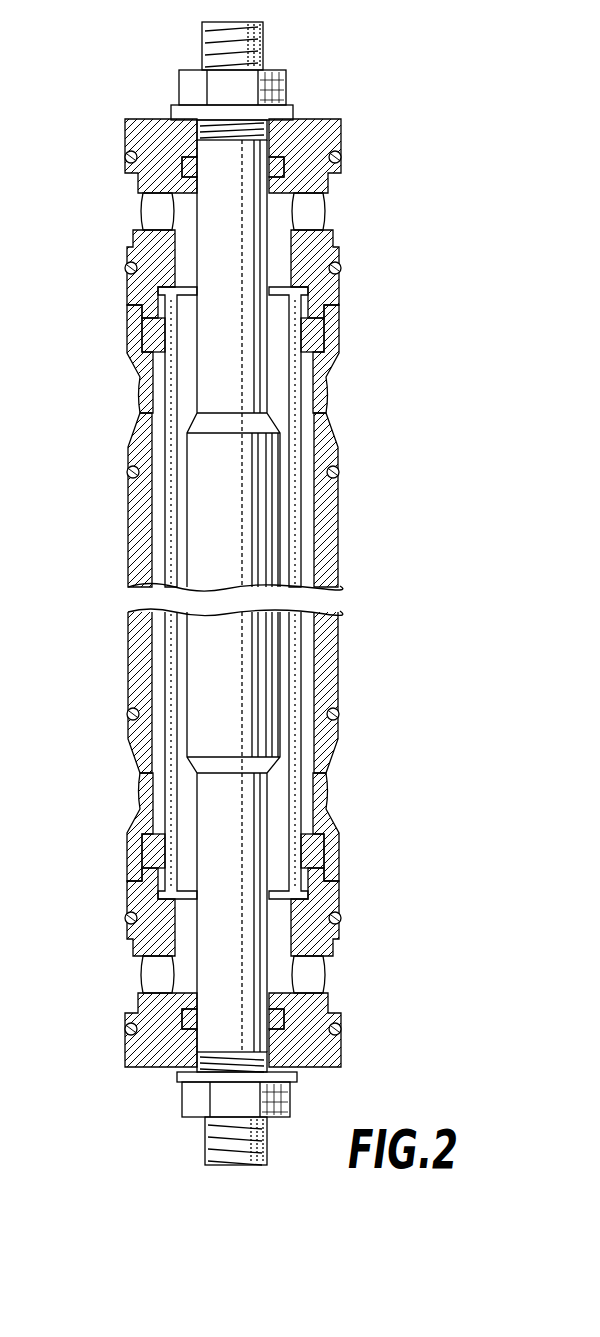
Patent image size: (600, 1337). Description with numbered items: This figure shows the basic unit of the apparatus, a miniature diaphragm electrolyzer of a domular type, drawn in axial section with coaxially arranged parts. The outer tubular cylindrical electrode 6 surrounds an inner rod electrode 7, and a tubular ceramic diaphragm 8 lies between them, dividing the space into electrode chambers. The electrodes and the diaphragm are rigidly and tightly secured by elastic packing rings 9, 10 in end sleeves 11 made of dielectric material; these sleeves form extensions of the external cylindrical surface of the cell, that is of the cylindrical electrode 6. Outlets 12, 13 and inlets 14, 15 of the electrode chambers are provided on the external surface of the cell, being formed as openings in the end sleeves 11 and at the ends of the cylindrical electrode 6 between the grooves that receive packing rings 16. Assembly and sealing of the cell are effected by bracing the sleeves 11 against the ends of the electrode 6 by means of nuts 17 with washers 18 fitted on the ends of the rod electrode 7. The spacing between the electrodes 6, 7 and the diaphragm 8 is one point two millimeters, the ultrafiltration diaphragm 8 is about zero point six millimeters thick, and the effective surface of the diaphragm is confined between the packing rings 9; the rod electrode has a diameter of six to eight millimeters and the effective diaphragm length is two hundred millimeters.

The cylindrical electrode 6 is at (330, 512).
The rod electrode 7 is at (270, 633).
The ceramic diaphragm 8 is at (297, 675).
The packing ring 9 is at (330, 337).
The packing ring 10 is at (178, 155).
The end sleeve 11 is at (318, 242).
The outlet 12 is at (137, 978).
The outlet 13 is at (140, 792).
The inlet 14 is at (143, 400).
The inlet 15 is at (148, 218).
The packing ring 16 is at (122, 275).
The nut 17 is at (290, 80).
The washer 18 is at (292, 110).